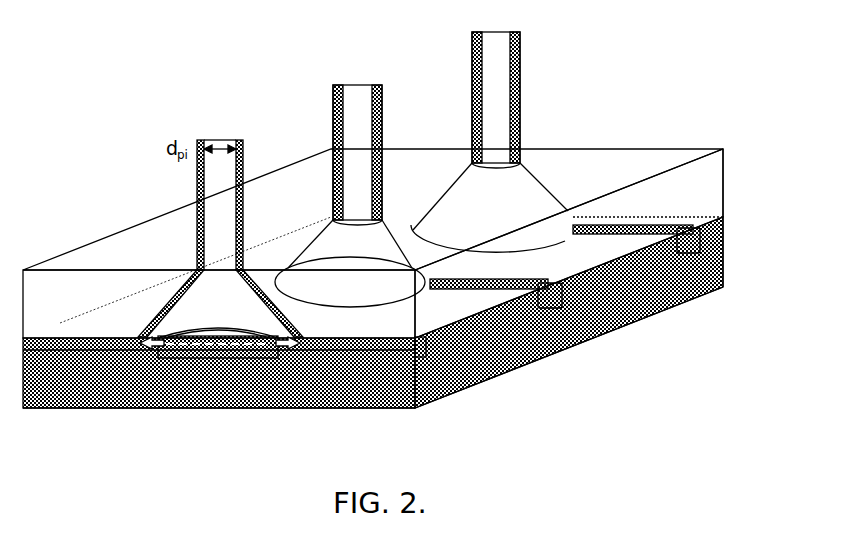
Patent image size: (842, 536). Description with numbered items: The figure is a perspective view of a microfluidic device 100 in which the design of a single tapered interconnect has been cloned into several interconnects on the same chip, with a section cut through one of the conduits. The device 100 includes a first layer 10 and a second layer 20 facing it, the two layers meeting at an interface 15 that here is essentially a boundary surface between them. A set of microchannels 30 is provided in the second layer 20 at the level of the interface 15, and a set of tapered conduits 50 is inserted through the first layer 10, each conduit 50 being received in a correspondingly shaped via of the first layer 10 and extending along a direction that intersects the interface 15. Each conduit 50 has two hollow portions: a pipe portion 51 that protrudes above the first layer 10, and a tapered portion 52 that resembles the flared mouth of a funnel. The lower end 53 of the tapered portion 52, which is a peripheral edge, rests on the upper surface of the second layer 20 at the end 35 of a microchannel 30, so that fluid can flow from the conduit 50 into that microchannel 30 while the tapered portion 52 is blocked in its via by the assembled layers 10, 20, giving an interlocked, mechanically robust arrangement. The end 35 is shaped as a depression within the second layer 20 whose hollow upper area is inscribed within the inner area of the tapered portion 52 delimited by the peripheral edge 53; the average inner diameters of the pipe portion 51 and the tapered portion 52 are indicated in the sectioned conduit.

The first layer 10 is at (640, 165).
The interface 15 is at (703, 226).
The second layer 20 is at (708, 263).
The microchannel 30 is at (560, 307).
The end of microchannel 35 is at (223, 353).
The tapered conduit 50 is at (465, 163).
The pipe portion 51 is at (213, 200).
The tapered portion 52 is at (290, 318).
The lower end 53 is at (157, 340).
The microfluidic device 100 is at (583, 378).